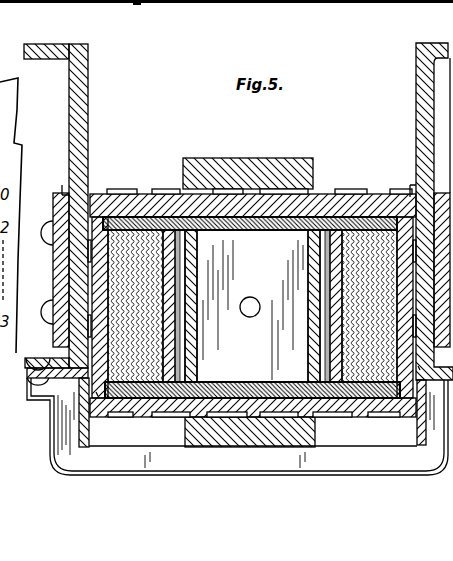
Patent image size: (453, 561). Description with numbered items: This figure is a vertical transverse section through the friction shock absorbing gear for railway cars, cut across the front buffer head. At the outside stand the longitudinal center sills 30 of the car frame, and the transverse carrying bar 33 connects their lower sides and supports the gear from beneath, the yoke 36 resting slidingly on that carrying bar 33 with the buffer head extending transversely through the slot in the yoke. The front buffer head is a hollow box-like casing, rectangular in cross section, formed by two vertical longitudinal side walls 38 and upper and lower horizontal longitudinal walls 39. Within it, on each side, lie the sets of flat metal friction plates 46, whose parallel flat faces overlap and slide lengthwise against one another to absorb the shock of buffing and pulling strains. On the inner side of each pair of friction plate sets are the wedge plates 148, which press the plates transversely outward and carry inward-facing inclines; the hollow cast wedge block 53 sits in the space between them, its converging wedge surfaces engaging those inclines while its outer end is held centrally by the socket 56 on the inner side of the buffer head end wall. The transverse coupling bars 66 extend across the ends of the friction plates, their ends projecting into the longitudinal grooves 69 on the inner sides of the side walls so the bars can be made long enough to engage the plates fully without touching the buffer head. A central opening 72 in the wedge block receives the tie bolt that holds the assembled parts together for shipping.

The longitudinal center sills 30 is at (88, 89).
The transverse carrying bar 33 is at (237, 421).
The yoke 36 is at (254, 166).
The vertical longitudinal side walls 38 is at (100, 280).
The upper and lower horizontal longitudinal walls 39 is at (330, 205).
The friction plates 46 is at (149, 200).
The wedge block 53 is at (315, 360).
The socket 56 is at (163, 413).
The front coupling bars 66 is at (168, 223).
The longitudinal grooves 69 is at (67, 197).
The opening 72 is at (252, 301).
The wedge plates 148 is at (338, 257).